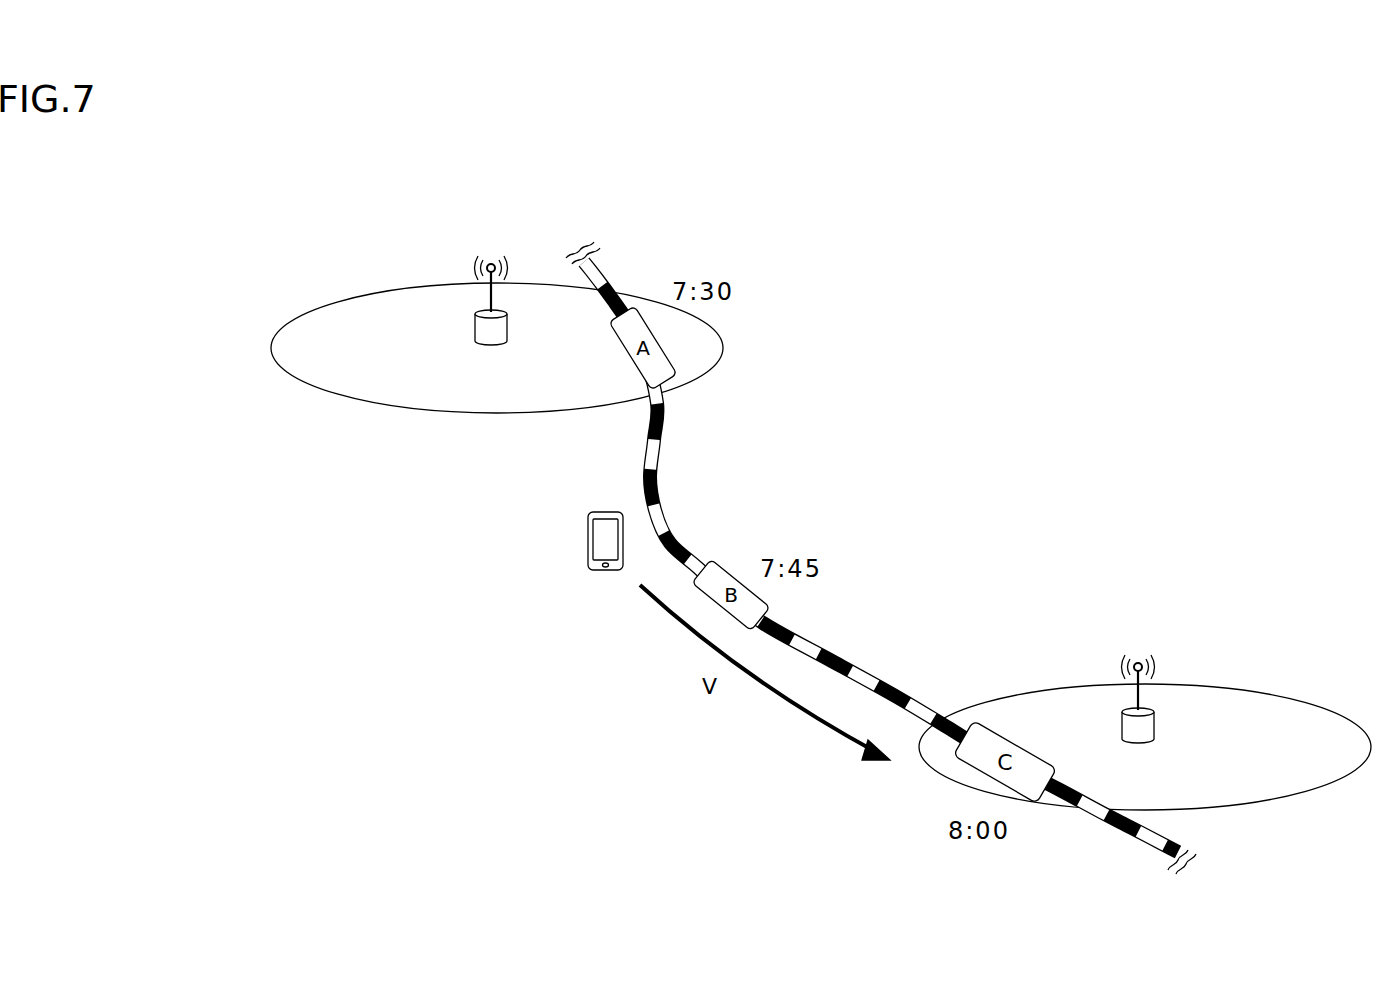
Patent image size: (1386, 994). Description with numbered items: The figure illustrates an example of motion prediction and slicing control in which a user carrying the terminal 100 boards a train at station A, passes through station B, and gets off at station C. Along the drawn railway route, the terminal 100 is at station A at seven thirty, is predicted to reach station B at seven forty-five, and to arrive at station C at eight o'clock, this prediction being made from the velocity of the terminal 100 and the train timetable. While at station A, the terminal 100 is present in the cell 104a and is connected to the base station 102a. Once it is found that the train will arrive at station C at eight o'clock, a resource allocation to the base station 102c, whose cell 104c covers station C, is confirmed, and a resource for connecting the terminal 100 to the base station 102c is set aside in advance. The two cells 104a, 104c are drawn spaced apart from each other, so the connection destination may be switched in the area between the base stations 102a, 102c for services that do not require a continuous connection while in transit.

The terminal 100 is at (596, 572).
The base station 102a is at (477, 322).
The base station 102c is at (1158, 708).
The cell 104a is at (318, 410).
The cell 104c is at (1306, 790).